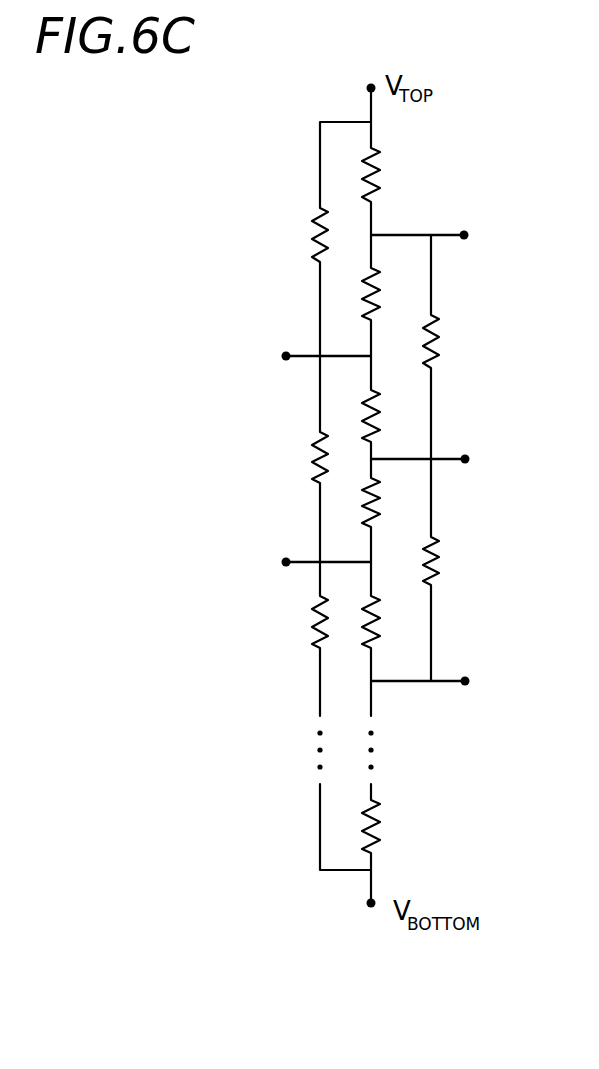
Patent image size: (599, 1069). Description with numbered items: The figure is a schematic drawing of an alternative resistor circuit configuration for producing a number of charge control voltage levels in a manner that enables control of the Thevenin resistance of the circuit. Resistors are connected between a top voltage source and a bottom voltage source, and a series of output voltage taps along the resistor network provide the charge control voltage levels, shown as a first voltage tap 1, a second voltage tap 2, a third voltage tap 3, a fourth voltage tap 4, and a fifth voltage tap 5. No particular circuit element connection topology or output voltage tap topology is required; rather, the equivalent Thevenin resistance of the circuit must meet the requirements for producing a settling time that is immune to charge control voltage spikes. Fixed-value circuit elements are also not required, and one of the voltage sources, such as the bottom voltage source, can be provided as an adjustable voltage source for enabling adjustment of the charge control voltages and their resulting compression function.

The voltage tap V1 1 is at (439, 240).
The voltage tap V2 2 is at (305, 356).
The voltage tap V3 3 is at (440, 461).
The voltage tap V4 4 is at (305, 564).
The voltage tap V5 5 is at (440, 686).